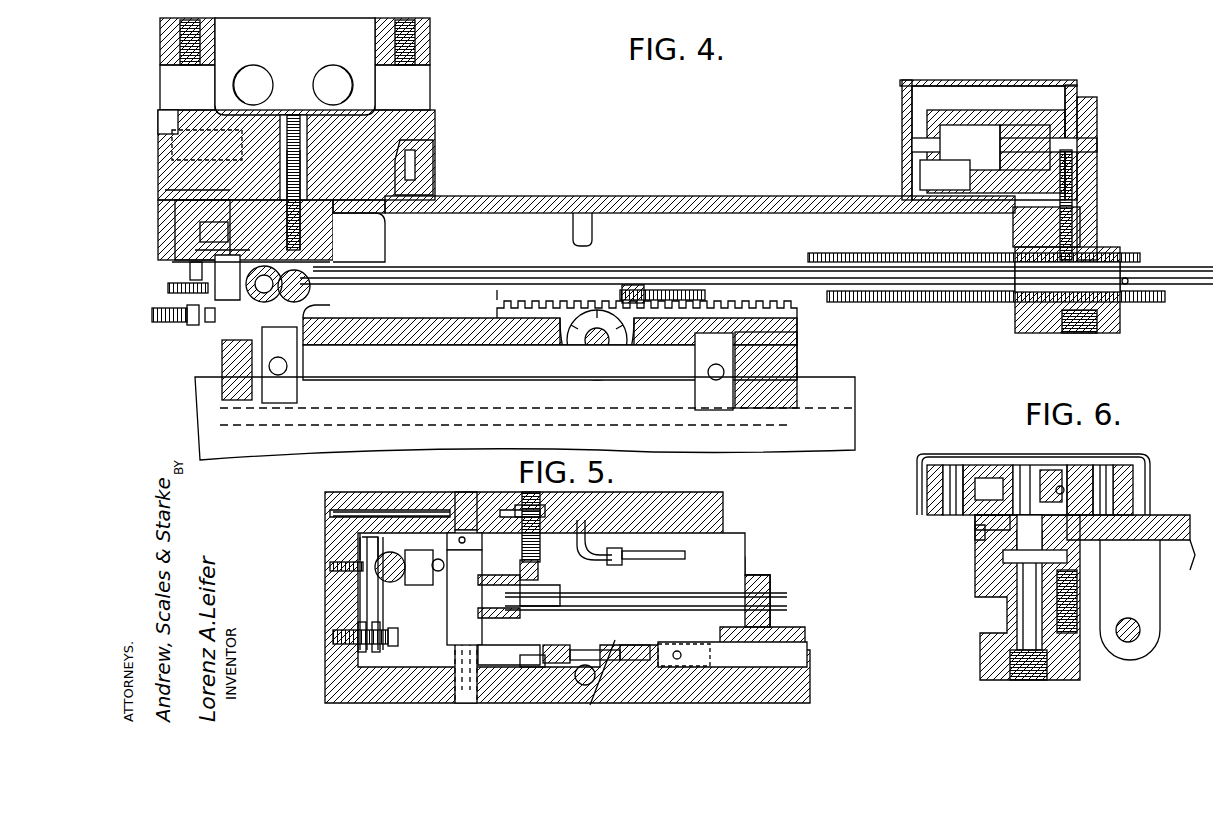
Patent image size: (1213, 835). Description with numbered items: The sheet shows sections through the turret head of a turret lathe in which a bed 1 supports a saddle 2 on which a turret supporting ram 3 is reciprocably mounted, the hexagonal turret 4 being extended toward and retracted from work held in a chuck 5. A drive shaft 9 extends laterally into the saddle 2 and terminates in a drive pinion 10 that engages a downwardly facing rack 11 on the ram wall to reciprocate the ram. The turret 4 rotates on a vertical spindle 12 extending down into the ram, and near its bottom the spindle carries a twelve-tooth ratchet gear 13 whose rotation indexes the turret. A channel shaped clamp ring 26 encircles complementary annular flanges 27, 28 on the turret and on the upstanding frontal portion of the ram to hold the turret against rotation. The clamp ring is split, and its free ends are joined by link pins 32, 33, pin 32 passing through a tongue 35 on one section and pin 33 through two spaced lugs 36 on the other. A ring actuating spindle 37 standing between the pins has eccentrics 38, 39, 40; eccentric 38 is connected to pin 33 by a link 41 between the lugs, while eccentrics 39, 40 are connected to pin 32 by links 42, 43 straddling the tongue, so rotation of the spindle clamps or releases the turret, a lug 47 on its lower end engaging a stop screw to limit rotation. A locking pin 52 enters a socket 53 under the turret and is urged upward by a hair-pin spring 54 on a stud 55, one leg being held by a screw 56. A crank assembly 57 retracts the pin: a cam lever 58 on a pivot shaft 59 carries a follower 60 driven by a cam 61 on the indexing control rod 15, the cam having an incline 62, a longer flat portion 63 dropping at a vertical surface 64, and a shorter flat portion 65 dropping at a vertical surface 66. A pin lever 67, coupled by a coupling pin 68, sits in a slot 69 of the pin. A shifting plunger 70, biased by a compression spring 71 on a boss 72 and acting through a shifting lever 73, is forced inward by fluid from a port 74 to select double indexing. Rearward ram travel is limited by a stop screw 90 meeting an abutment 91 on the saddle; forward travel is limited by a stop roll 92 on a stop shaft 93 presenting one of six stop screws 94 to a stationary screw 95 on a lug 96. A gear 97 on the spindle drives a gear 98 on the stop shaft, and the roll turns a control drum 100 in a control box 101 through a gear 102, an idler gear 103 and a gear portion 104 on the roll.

In FIG. 4, the bed 1 is at (855, 400).
In FIG. 4, the saddle 2 is at (800, 348).
In FIG. 4, the ram 3 is at (678, 196).
In FIG. 4, the turret 4 is at (437, 50).
In FIG. 4, the chuck 5 is at (420, 258).
In FIG. 4, the drive shaft 9 is at (594, 318).
In FIG. 4, the drive pinion 10 is at (545, 365).
In FIG. 4, the rack 11 is at (497, 297).
In FIG. 4, the spindle 12 is at (370, 231).
In FIG. 4, the ratchet gear 13 is at (372, 240).
In FIG. 5, the indexing control rod 15 is at (715, 642).
In FIG. 4, the clamp ring 26 is at (428, 168).
In FIG. 4, the annular flange 27 is at (388, 130).
In FIG. 4, the annular flange 28 is at (418, 212).
In FIG. 6, the link pin 32 is at (955, 515).
In FIG. 6, the link pin 33 is at (1100, 527).
In FIG. 6, the tongue 35 is at (920, 488).
In FIG. 6, the lugs 36 is at (1133, 468).
In FIG. 6, the ring actuating spindle 37 is at (1022, 612).
In FIG. 6, the eccentric 38 is at (1014, 470).
In FIG. 6, the eccentric 39 is at (1034, 510).
In FIG. 6, the eccentric 40 is at (1048, 470).
In FIG. 6, the link 41 is at (1133, 482).
In FIG. 6, the link 42 is at (980, 465).
In FIG. 6, the link 43 is at (922, 515).
In FIG. 6, the lug 47 is at (1003, 556).
In FIG. 4, the locking pin 52 is at (215, 212).
In FIG. 4, the socket 53 is at (172, 133).
In FIG. 4, the hair-pin spring 54 is at (195, 250).
In FIG. 5, the hair-pin spring 54 is at (362, 598).
In FIG. 5, the stud 55 is at (340, 637).
In FIG. 4, the screw 56 is at (190, 270).
In FIG. 5, the screw 56 is at (340, 565).
In FIG. 4, the crank assembly 57 is at (270, 303).
In FIG. 5, the crank assembly 57 is at (445, 605).
In FIG. 5, the cam lever 58 is at (509, 649).
In FIG. 5, the pivot shaft 59 is at (455, 642).
In FIG. 5, the follower 60 is at (580, 640).
In FIG. 5, the cam 61 is at (592, 650).
In FIG. 5, the incline 62 is at (538, 658).
In FIG. 5, the flat portion 63 is at (610, 652).
In FIG. 5, the vertical surface 64 is at (595, 682).
In FIG. 5, the flat portion 65 is at (540, 660).
In FIG. 5, the vertical surface 66 is at (590, 635).
In FIG. 4, the pin lever 67 is at (200, 232).
In FIG. 5, the pin lever 67 is at (425, 560).
In FIG. 4, the coupling pin 68 is at (230, 305).
In FIG. 5, the coupling pin 68 is at (425, 582).
In FIG. 4, the slot 69 is at (168, 290).
In FIG. 5, the slot 69 is at (390, 550).
In FIG. 5, the shifting plunger 70 is at (522, 525).
In FIG. 5, the compression spring 71 is at (543, 598).
In FIG. 5, the boss 72 is at (545, 578).
In FIG. 5, the shifting lever 73 is at (493, 557).
In FIG. 5, the port 74 is at (487, 512).
In FIG. 4, the stop screw 90 is at (160, 322).
In FIG. 4, the abutment 91 is at (323, 302).
In FIG. 4, the stop roll 92 is at (1115, 308).
In FIG. 5, the stop shaft 93 is at (700, 595).
In FIG. 4, the stop screws 94 is at (1155, 294).
In FIG. 4, the stationary screw 95 is at (708, 294).
In FIG. 4, the lug 96 is at (670, 288).
In FIG. 4, the gear 97 is at (165, 190).
In FIG. 4, the gear 98 is at (310, 290).
In FIG. 5, the gear 98 is at (499, 591).
In FIG. 4, the control drum 100 is at (993, 122).
In FIG. 4, the control box 101 is at (902, 115).
In FIG. 4, the gear 102 is at (1097, 118).
In FIG. 4, the idler gear 103 is at (1085, 210).
In FIG. 4, the gear portion 104 is at (1082, 333).